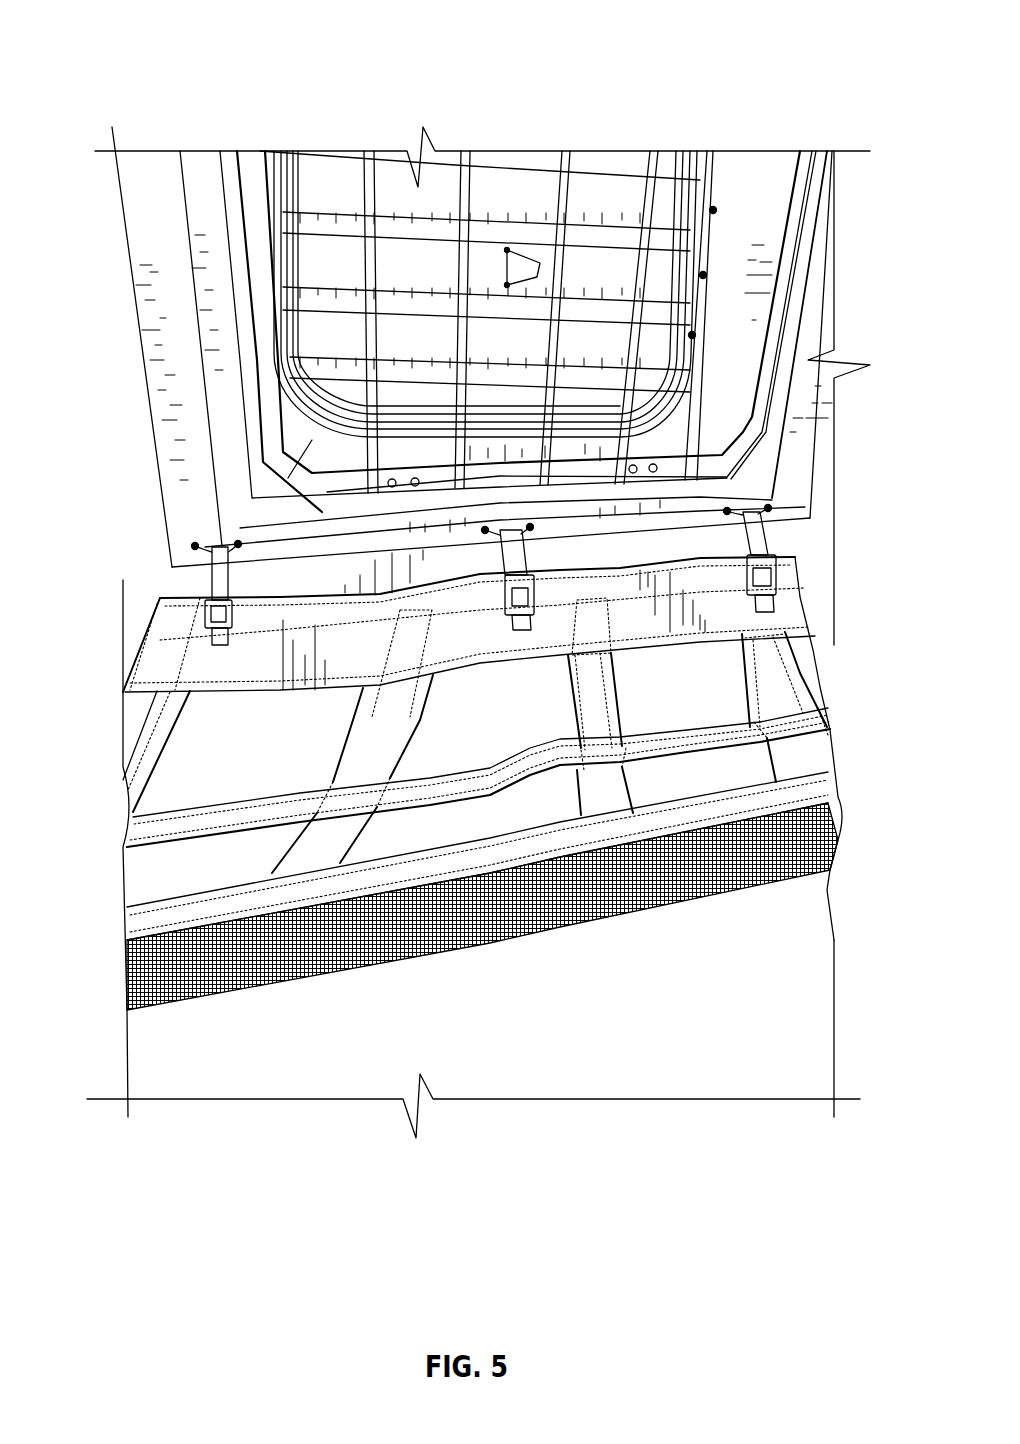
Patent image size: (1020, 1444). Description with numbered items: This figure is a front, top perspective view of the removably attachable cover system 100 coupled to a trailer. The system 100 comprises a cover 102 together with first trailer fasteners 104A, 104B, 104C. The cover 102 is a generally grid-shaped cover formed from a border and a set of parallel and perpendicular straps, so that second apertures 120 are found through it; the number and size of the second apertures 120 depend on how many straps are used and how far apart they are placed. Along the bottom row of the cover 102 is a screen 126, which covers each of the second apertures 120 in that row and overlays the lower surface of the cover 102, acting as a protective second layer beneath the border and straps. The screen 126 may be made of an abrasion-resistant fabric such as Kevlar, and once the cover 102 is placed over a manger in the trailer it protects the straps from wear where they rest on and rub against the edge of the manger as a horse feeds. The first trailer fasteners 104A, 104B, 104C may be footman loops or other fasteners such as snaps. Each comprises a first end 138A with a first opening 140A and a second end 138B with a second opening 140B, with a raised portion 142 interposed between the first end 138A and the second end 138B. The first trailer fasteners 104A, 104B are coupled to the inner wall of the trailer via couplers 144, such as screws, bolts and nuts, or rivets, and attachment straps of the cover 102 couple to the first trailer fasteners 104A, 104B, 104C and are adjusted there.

The removably attachable cover system 100 is at (211, 47).
The cover 102 is at (475, 783).
The first trailer fastener 104A is at (205, 548).
The first trailer fastener 104B is at (494, 535).
The first trailer fastener 104C is at (770, 512).
The second apertures 120 is at (523, 730).
The screen 126 is at (157, 982).
The first end 138A is at (193, 547).
The second end 138B is at (237, 543).
The first opening 140A is at (486, 530).
The second opening 140B is at (530, 527).
The raised portion 142 is at (215, 556).
The couplers 144 is at (768, 506).